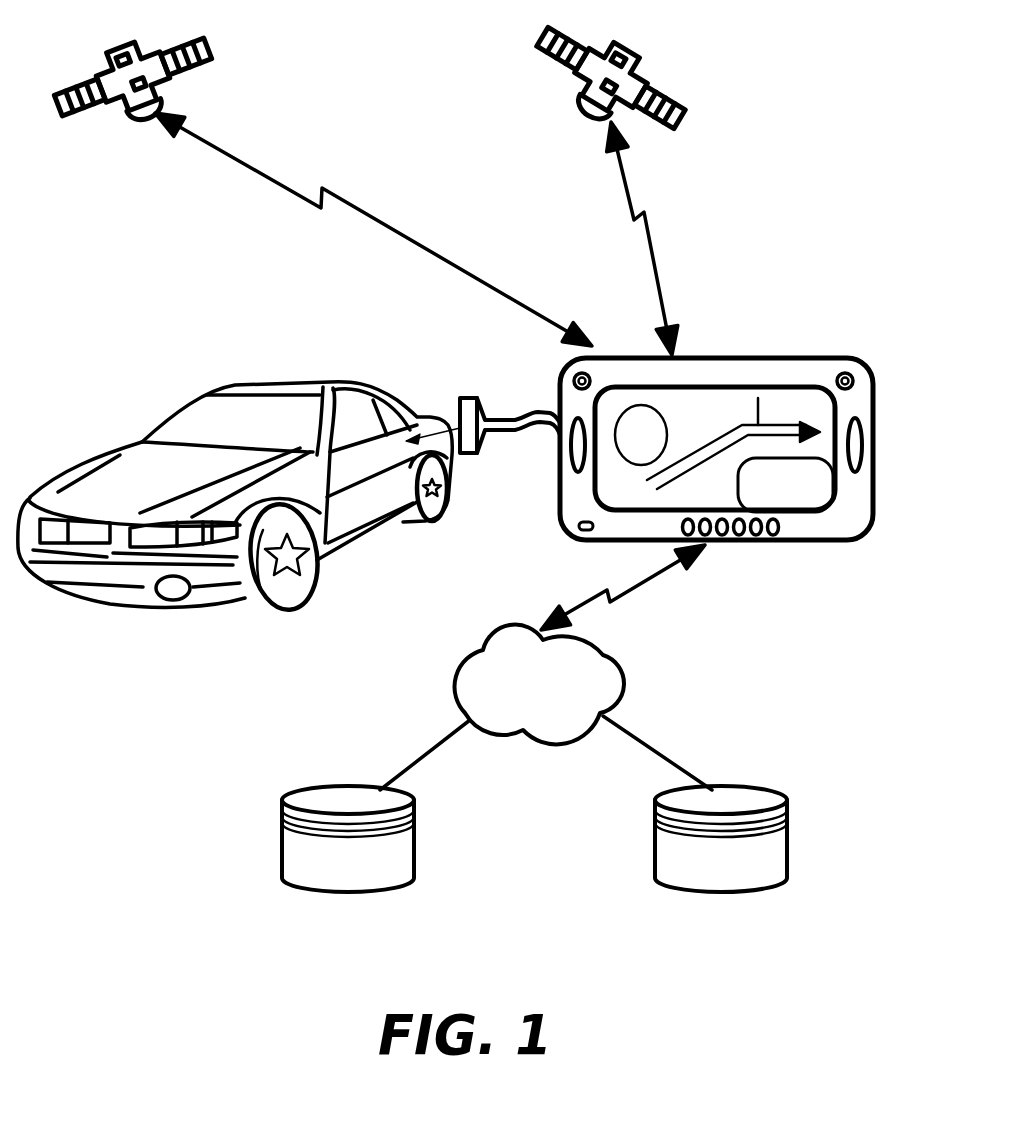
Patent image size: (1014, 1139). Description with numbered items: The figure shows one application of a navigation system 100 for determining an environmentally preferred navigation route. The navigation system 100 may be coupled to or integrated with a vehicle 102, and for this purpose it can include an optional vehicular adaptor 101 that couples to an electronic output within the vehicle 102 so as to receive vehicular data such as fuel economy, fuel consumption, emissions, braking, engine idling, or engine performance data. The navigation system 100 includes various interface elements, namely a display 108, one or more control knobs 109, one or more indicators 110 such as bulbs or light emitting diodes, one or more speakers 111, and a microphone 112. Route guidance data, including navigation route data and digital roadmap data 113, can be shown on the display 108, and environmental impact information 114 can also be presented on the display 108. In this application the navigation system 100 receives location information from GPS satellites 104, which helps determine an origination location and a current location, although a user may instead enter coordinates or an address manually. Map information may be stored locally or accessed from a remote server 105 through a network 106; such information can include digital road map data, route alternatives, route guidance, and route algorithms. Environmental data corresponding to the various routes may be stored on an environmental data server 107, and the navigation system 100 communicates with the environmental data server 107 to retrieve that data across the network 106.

The navigation system 100 is at (703, 475).
The vehicular adaptor 101 is at (466, 395).
The vehicle 102 is at (137, 462).
The GPS satellites 104 is at (163, 82).
The remote server 105 is at (778, 882).
The network 106 is at (465, 655).
The environmental data server 107 is at (404, 884).
The display 108 is at (701, 410).
The control knob 109 is at (845, 372).
The indicator 110 is at (574, 381).
The speaker 111 is at (774, 530).
The microphone 112 is at (575, 526).
The digital roadmap data 113 is at (743, 420).
The environmental impact information 114 is at (820, 488).